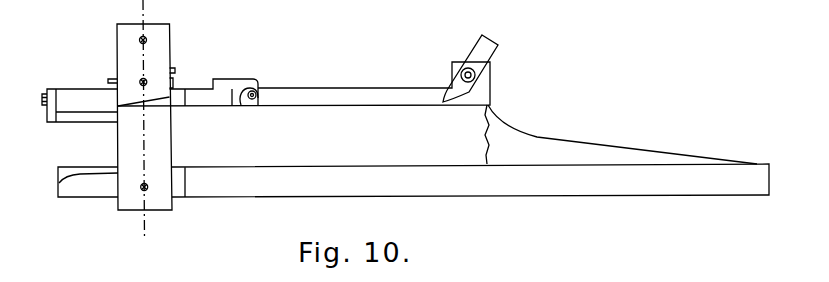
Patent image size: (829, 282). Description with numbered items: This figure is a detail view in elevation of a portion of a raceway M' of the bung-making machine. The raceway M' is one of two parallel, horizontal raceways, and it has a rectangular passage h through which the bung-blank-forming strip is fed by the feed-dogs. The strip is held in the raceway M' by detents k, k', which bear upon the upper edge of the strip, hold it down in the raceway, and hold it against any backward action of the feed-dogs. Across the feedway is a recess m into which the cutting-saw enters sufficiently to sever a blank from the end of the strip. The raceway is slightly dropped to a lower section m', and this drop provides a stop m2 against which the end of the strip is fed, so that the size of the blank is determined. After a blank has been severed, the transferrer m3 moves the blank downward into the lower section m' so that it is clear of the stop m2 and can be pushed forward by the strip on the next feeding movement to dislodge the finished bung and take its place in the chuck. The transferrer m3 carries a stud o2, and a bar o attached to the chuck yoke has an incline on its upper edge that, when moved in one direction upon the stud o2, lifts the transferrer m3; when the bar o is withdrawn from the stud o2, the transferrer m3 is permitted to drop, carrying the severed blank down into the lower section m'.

The transferrer m3 is at (158, 45).
The stop m2 is at (117, 106).
The stud o2 is at (180, 57).
The bar o is at (185, 68).
The lower section m' is at (79, 115).
The recess m is at (304, 84).
The detent k is at (244, 76).
The detent k' is at (470, 67).
The rectangular passage h is at (490, 115).
The raceway M' is at (413, 191).